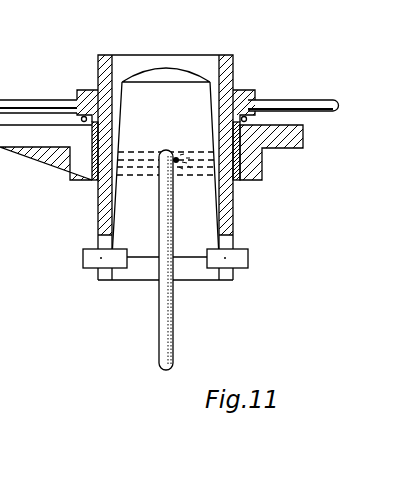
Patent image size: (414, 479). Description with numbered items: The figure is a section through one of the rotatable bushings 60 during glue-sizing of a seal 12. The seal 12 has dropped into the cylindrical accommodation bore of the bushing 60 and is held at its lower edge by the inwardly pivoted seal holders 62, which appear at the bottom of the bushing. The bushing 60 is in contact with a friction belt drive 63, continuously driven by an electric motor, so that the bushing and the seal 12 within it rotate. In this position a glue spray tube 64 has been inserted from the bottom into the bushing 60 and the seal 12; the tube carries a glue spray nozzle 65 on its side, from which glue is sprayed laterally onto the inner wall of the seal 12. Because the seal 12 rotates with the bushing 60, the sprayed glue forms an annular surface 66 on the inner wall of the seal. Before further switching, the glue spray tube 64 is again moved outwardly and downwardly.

The seal 12 is at (186, 75).
The rotatable bushing 60 is at (226, 68).
The seal holder 62 is at (243, 262).
The friction belt drive 63 is at (21, 99).
The glue spray tube 64 is at (168, 333).
The glue spray nozzle 65 is at (176, 165).
The annular surface 66 is at (135, 165).